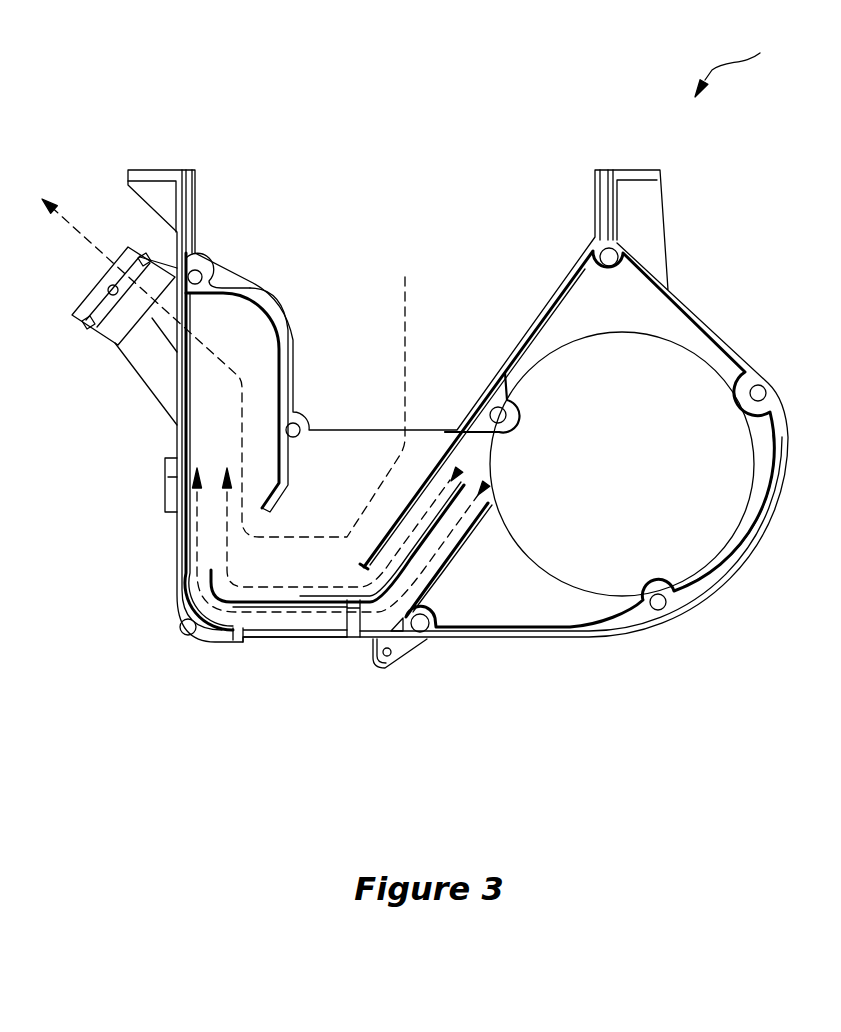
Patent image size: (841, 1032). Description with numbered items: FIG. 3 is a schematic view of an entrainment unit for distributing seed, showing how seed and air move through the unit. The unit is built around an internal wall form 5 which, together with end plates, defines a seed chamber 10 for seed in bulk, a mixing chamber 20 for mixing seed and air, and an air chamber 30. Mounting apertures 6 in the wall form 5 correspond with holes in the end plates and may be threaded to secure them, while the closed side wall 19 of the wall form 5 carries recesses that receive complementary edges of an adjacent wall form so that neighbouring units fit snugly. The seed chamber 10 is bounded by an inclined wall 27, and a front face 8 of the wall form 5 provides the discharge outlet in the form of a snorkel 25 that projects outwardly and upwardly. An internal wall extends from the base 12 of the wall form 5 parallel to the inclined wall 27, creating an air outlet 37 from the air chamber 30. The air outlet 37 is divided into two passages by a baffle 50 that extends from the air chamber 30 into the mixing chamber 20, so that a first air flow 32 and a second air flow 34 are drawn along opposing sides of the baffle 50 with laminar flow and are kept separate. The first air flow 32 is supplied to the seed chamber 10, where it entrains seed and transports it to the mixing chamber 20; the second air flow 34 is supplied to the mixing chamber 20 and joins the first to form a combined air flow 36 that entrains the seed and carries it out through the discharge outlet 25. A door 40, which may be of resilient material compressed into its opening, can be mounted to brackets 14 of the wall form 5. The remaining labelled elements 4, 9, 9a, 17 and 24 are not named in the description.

The mounting flange 4 is at (158, 166).
The wall form 5 is at (733, 65).
The mounting apertures 6 is at (762, 393).
The front face 8 is at (175, 575).
The bracket 9 is at (168, 270).
The mounting flange 9a is at (652, 223).
The seed chamber 10 is at (379, 225).
The base 12 is at (493, 640).
The brackets 14 is at (385, 664).
The hole 17 is at (389, 654).
The closed side wall 19 is at (537, 308).
The mixing chamber 20 is at (217, 335).
The sensor 24 is at (72, 313).
The discharge outlet 25 is at (140, 346).
The inclined wall 27 is at (282, 313).
The air chamber 30 is at (634, 405).
The first air flow 32 is at (459, 470).
The second air flow 34 is at (486, 486).
The combined air flow 36 is at (217, 452).
The air outlet 37 is at (555, 430).
The door 40 is at (237, 641).
The baffle 50 is at (353, 603).